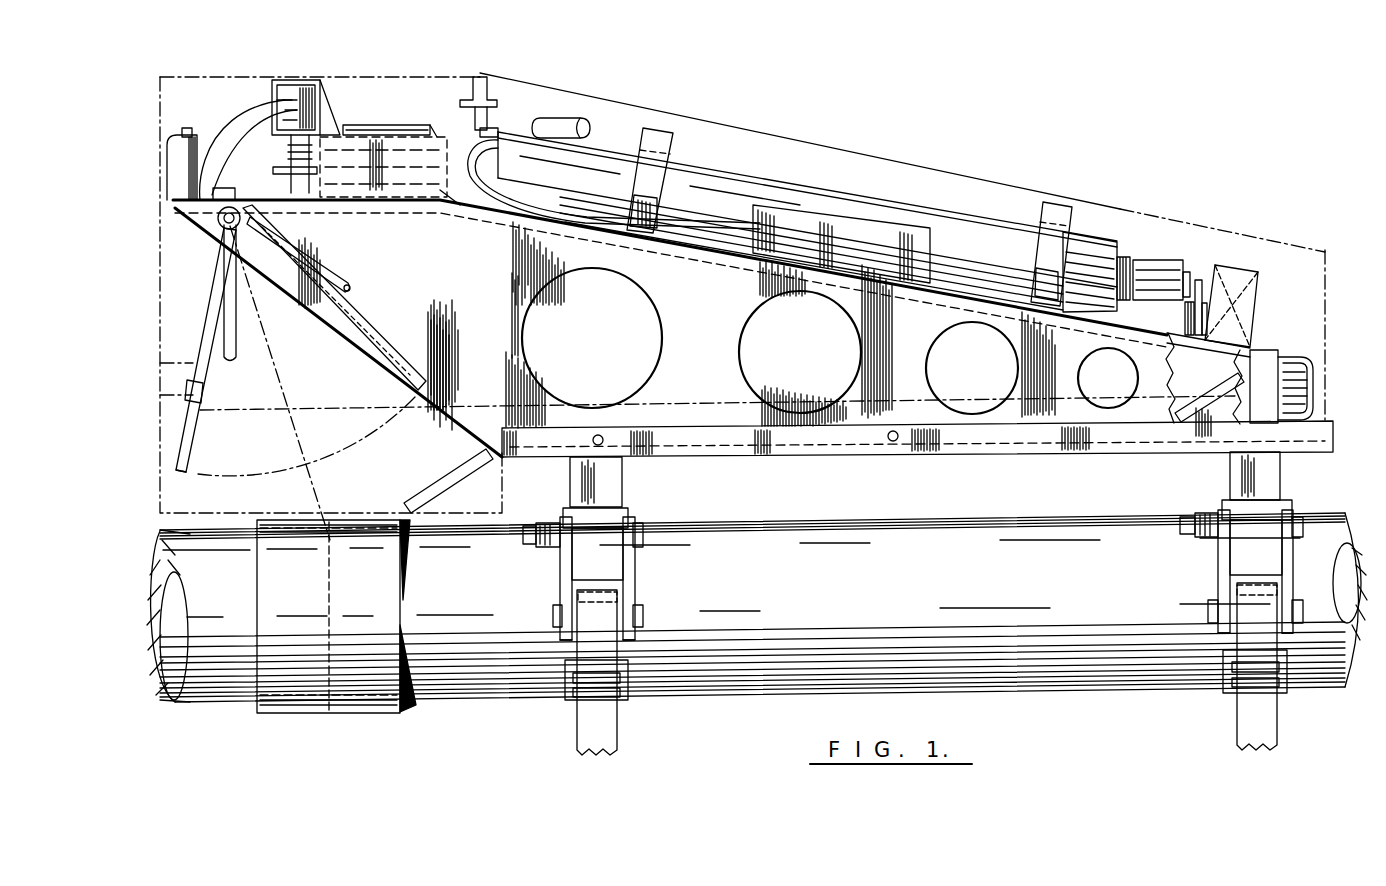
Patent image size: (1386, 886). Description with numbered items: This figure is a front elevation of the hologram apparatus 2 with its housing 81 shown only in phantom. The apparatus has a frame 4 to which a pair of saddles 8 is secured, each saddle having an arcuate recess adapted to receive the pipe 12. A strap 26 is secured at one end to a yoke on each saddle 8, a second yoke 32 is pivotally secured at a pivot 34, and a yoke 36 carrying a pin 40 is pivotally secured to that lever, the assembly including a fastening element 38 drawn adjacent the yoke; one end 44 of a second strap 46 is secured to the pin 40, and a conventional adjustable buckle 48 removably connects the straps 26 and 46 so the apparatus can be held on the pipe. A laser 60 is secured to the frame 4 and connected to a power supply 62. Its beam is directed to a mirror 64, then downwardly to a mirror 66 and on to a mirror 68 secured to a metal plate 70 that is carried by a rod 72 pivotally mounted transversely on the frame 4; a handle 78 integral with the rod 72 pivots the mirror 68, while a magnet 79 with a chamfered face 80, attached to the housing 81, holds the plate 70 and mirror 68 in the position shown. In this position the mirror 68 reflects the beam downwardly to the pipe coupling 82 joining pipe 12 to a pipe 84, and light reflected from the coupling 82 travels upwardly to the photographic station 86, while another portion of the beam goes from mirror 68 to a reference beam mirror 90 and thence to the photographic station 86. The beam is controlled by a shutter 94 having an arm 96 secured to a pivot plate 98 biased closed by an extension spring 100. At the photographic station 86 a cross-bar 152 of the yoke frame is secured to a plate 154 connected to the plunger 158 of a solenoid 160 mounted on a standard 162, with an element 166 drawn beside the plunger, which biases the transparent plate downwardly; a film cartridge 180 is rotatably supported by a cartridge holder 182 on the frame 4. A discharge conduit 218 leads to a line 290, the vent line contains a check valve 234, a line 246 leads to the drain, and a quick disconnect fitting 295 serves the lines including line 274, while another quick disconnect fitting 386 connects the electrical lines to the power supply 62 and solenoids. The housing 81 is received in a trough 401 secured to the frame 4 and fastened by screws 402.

The hologram apparatus 2 is at (1000, 120).
The frame 4 is at (456, 293).
The saddle 8 is at (622, 480).
The pipe 12 is at (909, 618).
The strap 26 is at (615, 740).
The second yoke 32 is at (636, 578).
The pivot 34 is at (640, 516).
The yoke 36 is at (572, 560).
The nut 38 is at (643, 612).
The pin 40 is at (578, 597).
The end of second strap 44 is at (556, 620).
The second strap 46 is at (600, 648).
The adjustable buckle 48 is at (570, 690).
The laser 60 is at (763, 165).
The power supply 62 is at (865, 228).
The mirror 64 is at (1250, 265).
The mirror 66 is at (1210, 382).
The mirror 68 is at (180, 450).
The metal plate 70 is at (215, 298).
The rod 72 is at (218, 224).
The handle 78 is at (237, 320).
The magnet 79 is at (180, 368).
The chamfered face 80 is at (200, 386).
The housing 81 is at (843, 148).
The pipe coupling 82 is at (352, 706).
The pipe 84 is at (222, 690).
The photographic station 86 is at (399, 100).
The reference beam mirror 90 is at (470, 450).
The shutter 94 is at (1207, 255).
The arm 96 is at (1199, 282).
The pivot plate 98 is at (1207, 302).
The extension spring 100 is at (1210, 320).
The cross-bar 152 is at (285, 172).
The plate 154 is at (290, 80).
The plunger 158 is at (295, 182).
The solenoid 160 is at (285, 96).
The standard 162 is at (330, 105).
The spring 166 is at (290, 150).
The film cartridge 180 is at (366, 125).
The cartridge holder 182 is at (395, 197).
The discharge conduit 218 is at (404, 125).
The check valve 234 is at (490, 97).
The line 246 is at (556, 118).
The line 274 is at (588, 122).
The line 290 is at (455, 200).
The quick disconnect fitting 295 is at (1293, 350).
The quick disconnect fitting 386 is at (1300, 378).
The trough 401 is at (845, 455).
The screws 402 is at (602, 436).